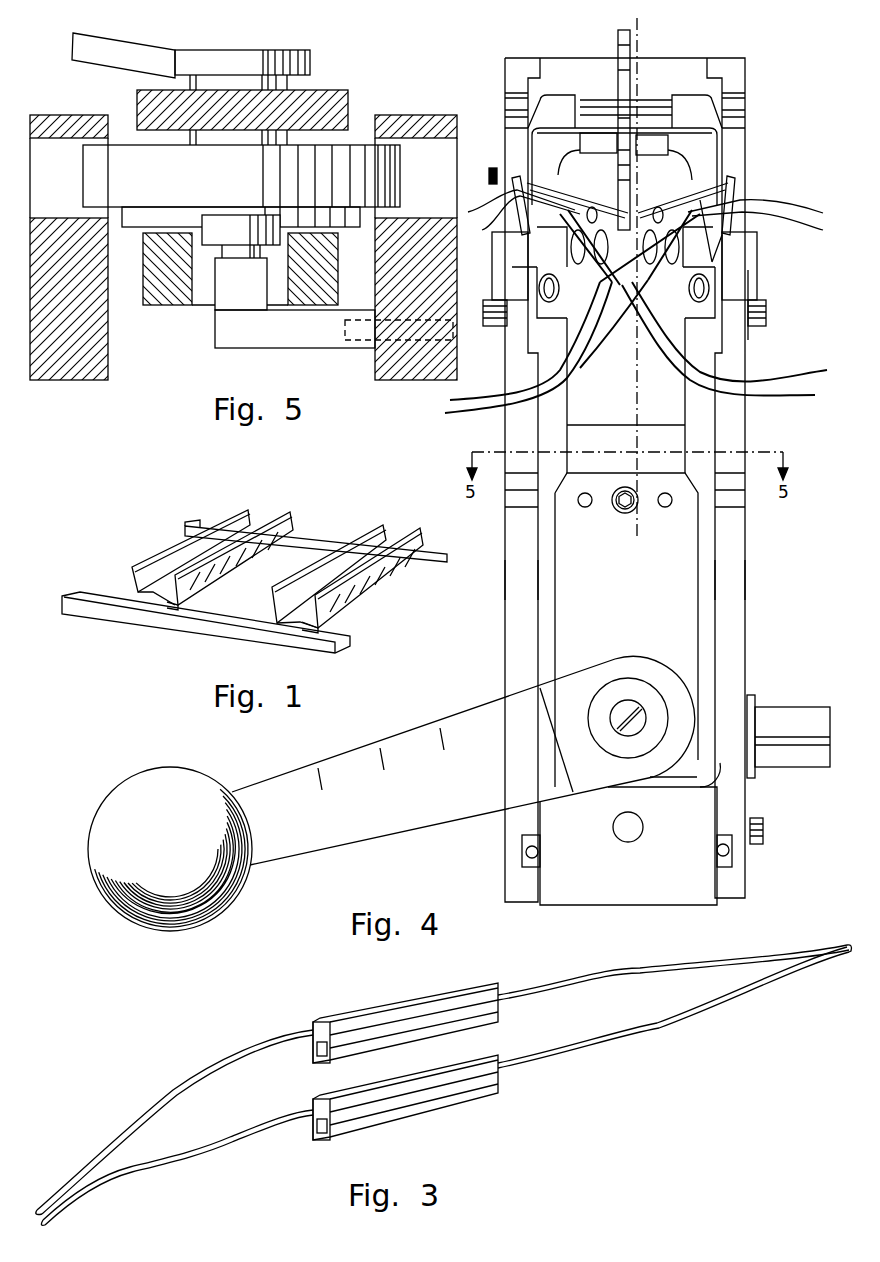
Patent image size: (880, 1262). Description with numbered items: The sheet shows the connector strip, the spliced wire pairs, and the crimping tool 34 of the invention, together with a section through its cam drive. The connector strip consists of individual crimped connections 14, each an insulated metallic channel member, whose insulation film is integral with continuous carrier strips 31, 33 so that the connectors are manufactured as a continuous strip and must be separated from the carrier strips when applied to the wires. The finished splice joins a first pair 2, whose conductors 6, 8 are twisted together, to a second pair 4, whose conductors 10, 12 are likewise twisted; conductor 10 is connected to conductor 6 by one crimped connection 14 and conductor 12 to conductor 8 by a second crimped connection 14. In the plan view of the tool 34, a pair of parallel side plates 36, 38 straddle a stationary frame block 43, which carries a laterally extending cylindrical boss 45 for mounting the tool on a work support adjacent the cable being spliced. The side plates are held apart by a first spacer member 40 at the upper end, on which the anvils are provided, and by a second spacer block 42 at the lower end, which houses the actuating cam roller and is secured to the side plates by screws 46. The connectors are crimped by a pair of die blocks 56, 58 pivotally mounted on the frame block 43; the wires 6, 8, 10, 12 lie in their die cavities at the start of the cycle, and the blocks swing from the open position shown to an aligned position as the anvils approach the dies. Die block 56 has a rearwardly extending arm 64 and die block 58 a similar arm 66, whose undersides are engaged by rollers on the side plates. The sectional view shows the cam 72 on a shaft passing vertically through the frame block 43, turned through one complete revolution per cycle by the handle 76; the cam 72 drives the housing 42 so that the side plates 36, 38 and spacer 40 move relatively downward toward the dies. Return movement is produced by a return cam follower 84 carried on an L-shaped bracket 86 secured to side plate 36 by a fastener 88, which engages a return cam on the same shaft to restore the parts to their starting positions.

In FIG. 4, the pair 2 is at (572, 285).
In FIG. 3, the pair 2 is at (174, 1128).
In FIG. 4, the second pair 4 is at (733, 271).
In FIG. 3, the second pair 4 is at (675, 1006).
In FIG. 4, the conductor 6 is at (483, 232).
In FIG. 3, the conductor 6 is at (162, 1093).
In FIG. 4, the conductor 8 is at (480, 218).
In FIG. 3, the conductor 8 is at (223, 1137).
In FIG. 4, the conductor 10 is at (823, 212).
In FIG. 3, the conductor 10 is at (522, 990).
In FIG. 4, the conductor 12 is at (823, 232).
In FIG. 3, the conductor 12 is at (647, 1022).
In FIG. 1, the crimped connection 14 is at (225, 578).
In FIG. 4, the crimped connection 14 is at (637, 18).
In FIG. 3, the crimped connection 14 is at (380, 996).
In FIG. 1, the carrier strip 31 is at (100, 608).
In FIG. 1, the carrier strip 33 is at (303, 537).
In FIG. 4, the tool 34 is at (492, 613).
In FIG. 5, the side plate 36 is at (378, 367).
In FIG. 4, the side plate 36 is at (515, 549).
In FIG. 5, the side plate 38 is at (103, 367).
In FIG. 4, the side plate 38 is at (737, 558).
In FIG. 4, the first spacer member 40 is at (652, 68).
In FIG. 4, the second spacer block 42 is at (640, 886).
In FIG. 5, the stationary frame block 43 is at (172, 306).
In FIG. 4, the stationary frame block 43 is at (620, 406).
In FIG. 4, the cylindrical boss 45 is at (803, 717).
In FIG. 4, the screw 46 is at (766, 828).
In FIG. 4, the die block 56 is at (558, 255).
In FIG. 4, the die block 58 is at (710, 255).
In FIG. 4, the rearwardly extending arm 64 is at (508, 275).
In FIG. 4, the rearwardly extending arm 66 is at (747, 246).
In FIG. 5, the cam 72 is at (192, 185).
In FIG. 5, the handle 76 is at (135, 42).
In FIG. 4, the handle 76 is at (424, 724).
In FIG. 5, the return cam follower 84 is at (238, 236).
In FIG. 5, the L-shaped bracket 86 is at (247, 341).
In FIG. 5, the fastener 88 is at (345, 330).